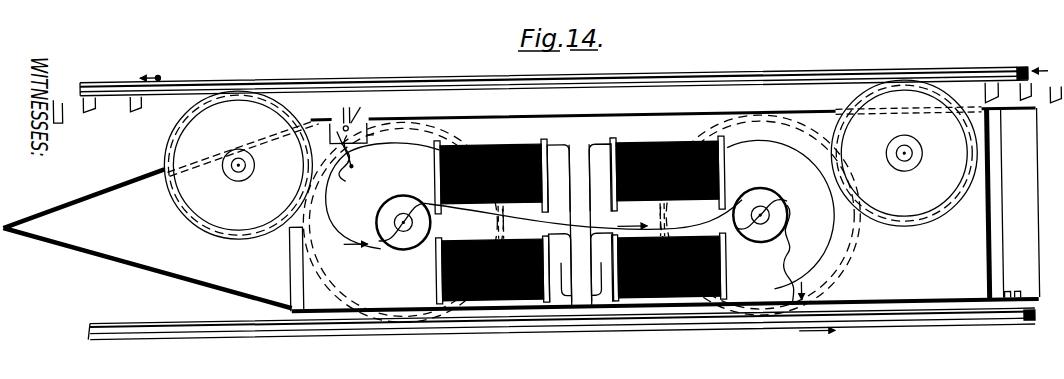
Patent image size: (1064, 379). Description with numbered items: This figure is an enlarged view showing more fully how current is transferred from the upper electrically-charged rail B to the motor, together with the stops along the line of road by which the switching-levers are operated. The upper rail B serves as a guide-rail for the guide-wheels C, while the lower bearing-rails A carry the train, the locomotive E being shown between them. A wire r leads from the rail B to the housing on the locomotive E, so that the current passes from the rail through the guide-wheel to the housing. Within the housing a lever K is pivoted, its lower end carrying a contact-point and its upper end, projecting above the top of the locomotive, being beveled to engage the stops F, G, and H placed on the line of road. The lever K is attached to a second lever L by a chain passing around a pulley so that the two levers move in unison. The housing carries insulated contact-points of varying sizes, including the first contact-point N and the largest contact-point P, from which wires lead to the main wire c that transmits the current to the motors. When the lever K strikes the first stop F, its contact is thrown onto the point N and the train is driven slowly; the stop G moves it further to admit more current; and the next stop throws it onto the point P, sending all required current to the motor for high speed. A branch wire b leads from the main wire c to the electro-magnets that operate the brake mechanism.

The lower bearing-rails A is at (203, 324).
The upper electrically-charged rail B is at (430, 86).
The guide-wheels C is at (241, 165).
The locomotive E is at (674, 197).
The stop F is at (595, 102).
The stop G is at (557, 103).
The stop H is at (520, 110).
The contact block J is at (370, 137).
The lever K is at (344, 107).
The second lever L is at (363, 105).
The contact-point N is at (355, 147).
The contact-point P is at (336, 132).
The contact wire Q is at (340, 150).
The branch wire b is at (370, 298).
The main wire c is at (331, 212).
The wire r is at (270, 70).